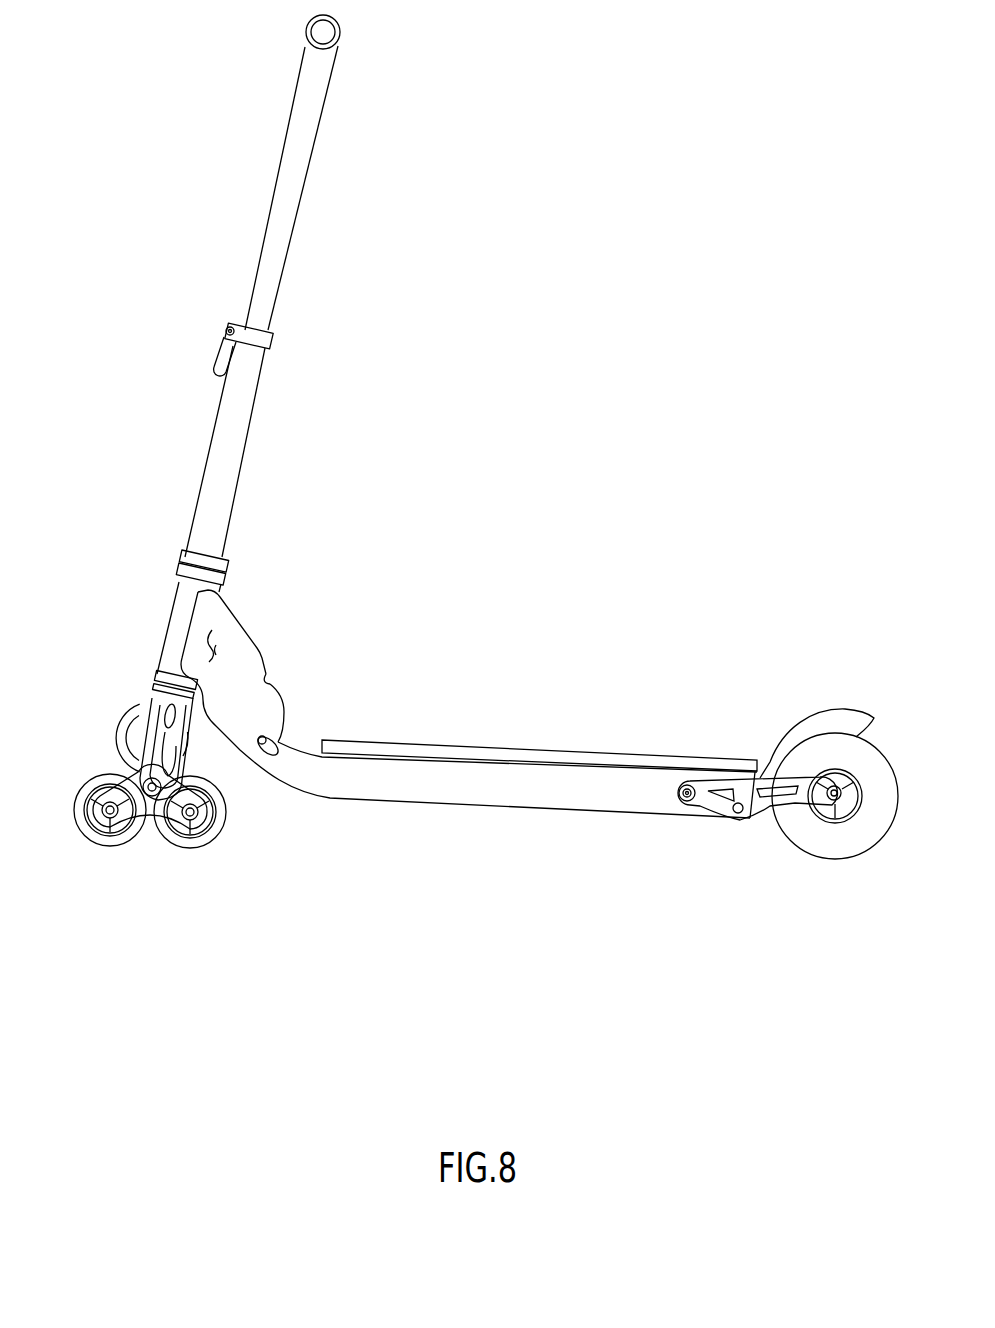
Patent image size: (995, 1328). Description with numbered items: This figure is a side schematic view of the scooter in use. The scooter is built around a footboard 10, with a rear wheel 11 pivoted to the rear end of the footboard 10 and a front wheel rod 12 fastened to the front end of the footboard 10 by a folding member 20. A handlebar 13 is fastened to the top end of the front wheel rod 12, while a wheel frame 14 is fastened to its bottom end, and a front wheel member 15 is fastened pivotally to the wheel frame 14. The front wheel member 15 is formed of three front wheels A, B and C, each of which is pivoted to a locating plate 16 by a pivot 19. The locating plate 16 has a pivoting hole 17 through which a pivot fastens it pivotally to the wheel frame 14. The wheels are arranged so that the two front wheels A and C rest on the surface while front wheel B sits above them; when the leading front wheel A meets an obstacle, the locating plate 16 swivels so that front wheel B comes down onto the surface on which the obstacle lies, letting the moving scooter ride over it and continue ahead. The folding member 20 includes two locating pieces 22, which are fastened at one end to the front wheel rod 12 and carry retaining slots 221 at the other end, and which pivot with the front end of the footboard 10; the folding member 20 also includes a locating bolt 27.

The footboard 10 is at (565, 705).
The rear wheel 11 is at (886, 765).
The front wheel rod 12 is at (197, 385).
The handlebar 13 is at (298, 177).
The wheel frame 14 is at (156, 700).
The front wheel member 15 is at (155, 766).
The locating plate 16 is at (150, 818).
The pivoting hole 17 is at (161, 787).
The pivot 19 is at (100, 804).
The folding member 20 is at (272, 585).
The locating piece 22 is at (469, 704).
The retaining slot 221 is at (272, 678).
The locating bolt 27 is at (294, 734).
The front wheel A is at (80, 820).
The front wheel B is at (128, 722).
The front wheel C is at (214, 835).